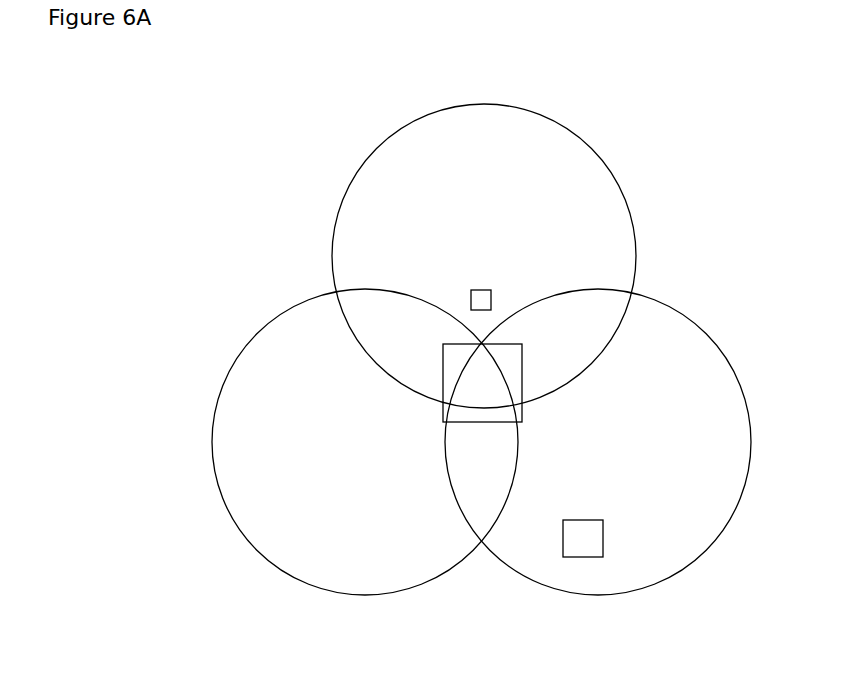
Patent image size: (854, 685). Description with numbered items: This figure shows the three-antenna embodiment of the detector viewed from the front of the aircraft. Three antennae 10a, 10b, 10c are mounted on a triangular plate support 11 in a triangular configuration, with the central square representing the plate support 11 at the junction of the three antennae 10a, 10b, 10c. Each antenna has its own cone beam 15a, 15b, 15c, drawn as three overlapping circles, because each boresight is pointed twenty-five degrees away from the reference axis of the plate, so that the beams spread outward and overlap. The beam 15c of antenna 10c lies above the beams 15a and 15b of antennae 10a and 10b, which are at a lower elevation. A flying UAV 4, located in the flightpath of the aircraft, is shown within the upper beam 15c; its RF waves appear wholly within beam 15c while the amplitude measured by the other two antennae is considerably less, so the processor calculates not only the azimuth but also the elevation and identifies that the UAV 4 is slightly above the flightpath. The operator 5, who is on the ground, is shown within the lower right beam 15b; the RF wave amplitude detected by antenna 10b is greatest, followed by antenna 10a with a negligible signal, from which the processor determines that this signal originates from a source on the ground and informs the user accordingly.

The cone beam 15a is at (336, 459).
The cone beam 15b is at (710, 459).
The cone beam 15c is at (501, 167).
The UAV 4 is at (471, 291).
The plate support 11 is at (443, 356).
The antenna 10a is at (462, 397).
The antenna 10b is at (515, 392).
The antenna 10c is at (478, 363).
The operator 5 is at (590, 549).